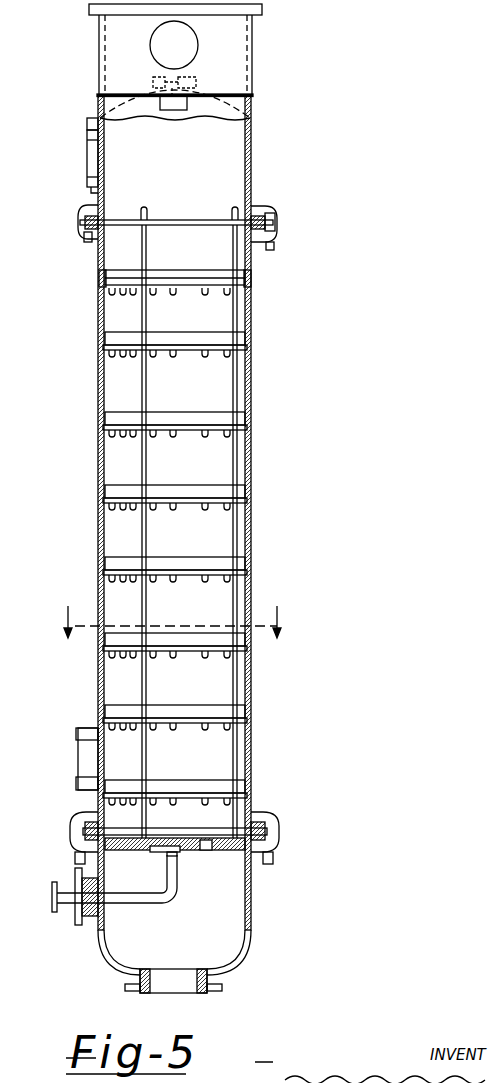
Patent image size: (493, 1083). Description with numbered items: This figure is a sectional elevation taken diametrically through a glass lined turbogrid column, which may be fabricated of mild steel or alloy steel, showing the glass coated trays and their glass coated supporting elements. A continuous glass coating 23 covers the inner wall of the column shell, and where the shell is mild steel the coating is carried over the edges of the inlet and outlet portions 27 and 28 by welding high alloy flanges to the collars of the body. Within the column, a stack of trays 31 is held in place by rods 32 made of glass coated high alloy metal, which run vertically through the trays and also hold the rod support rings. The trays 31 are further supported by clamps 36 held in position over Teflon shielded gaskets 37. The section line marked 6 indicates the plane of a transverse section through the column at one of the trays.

The continuous glass coating 23 is at (252, 369).
The inlet portion 27 is at (152, 63).
The outlet portion 28 is at (163, 990).
The trays 31 is at (223, 490).
The rods 32 is at (238, 530).
The clamps 36 is at (87, 210).
The Teflon shielded gaskets 37 is at (84, 232).
The section line 6- 6 is at (171, 612).